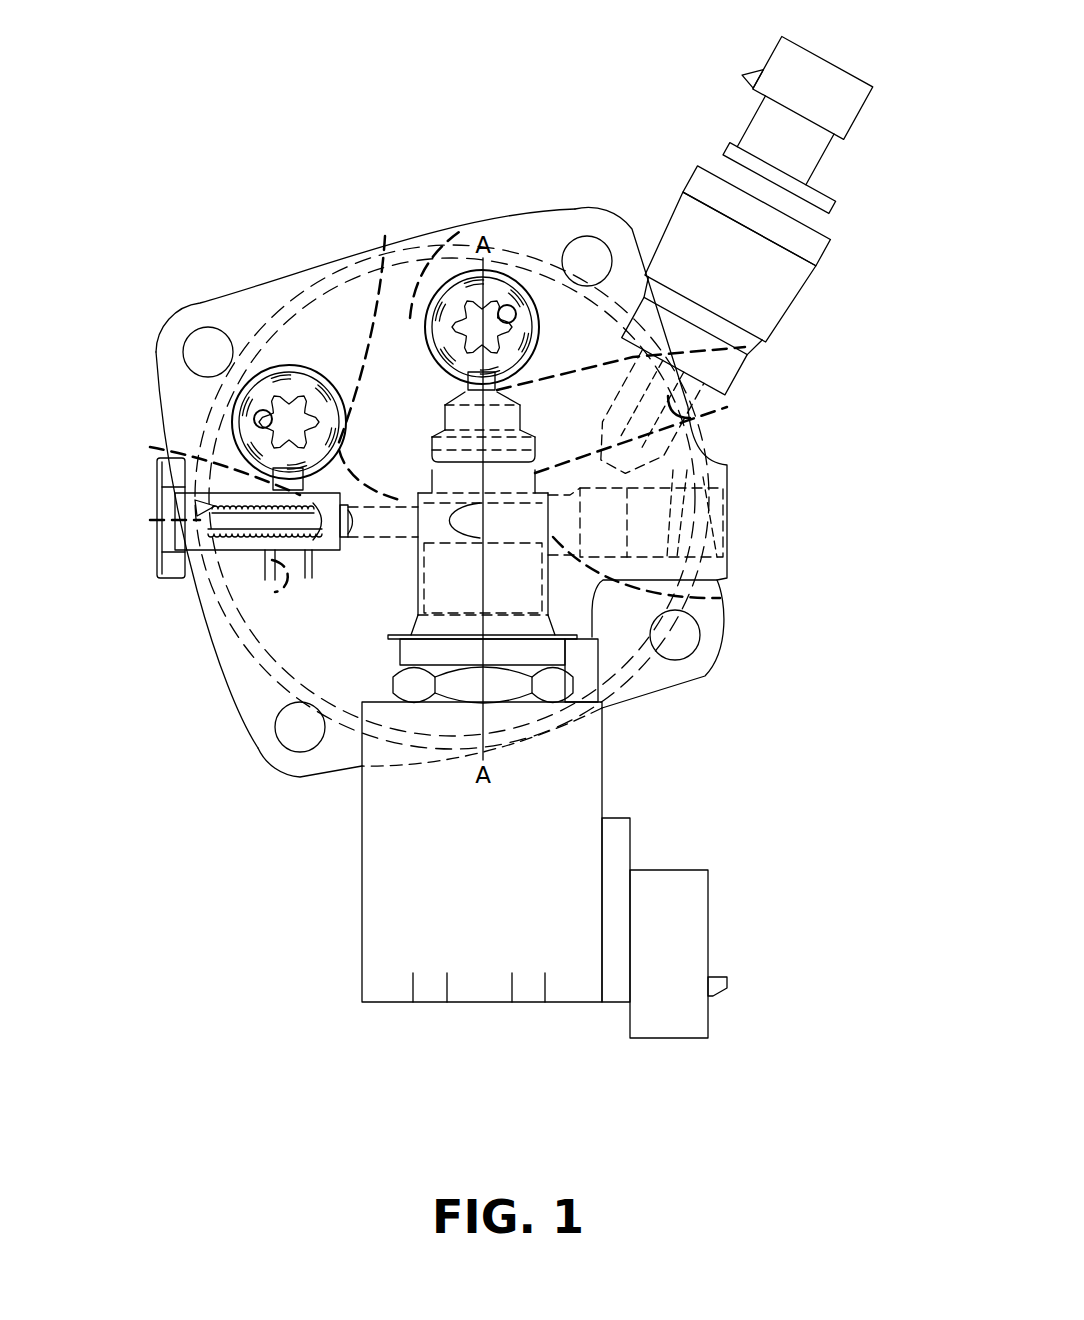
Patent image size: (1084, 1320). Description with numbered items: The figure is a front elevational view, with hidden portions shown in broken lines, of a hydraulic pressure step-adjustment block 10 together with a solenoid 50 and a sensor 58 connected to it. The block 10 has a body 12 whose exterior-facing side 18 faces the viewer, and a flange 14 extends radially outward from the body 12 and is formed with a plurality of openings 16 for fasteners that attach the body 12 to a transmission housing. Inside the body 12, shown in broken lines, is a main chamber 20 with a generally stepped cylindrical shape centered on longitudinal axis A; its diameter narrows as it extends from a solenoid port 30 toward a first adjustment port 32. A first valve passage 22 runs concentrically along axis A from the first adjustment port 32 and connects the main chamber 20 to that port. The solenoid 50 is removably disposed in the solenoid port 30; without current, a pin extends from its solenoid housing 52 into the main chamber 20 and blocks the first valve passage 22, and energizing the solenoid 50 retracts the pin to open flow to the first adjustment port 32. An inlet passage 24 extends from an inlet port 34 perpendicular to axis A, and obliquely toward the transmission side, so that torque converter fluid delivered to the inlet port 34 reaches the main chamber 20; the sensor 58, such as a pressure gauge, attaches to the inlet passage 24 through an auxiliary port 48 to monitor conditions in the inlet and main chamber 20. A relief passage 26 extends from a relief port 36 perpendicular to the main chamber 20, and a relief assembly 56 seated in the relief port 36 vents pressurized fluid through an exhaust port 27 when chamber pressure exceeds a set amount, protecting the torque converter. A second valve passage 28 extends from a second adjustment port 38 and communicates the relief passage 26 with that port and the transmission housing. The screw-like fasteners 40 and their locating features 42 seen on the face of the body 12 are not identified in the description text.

The hydraulic pressure step-adjustment block 10 is at (491, 103).
The body 12 is at (310, 258).
The flange 14 is at (250, 288).
The openings 16 is at (205, 352).
The exterior-facing side 18 is at (253, 697).
The main chamber 20 is at (551, 513).
The first valve passage 22 is at (745, 347).
The inlet passage 24 is at (720, 598).
The relief passage 26 is at (372, 535).
The exhaust port 27 is at (290, 587).
The second valve passage 28 is at (210, 466).
The solenoid port 30 is at (547, 628).
The first adjustment port 32 is at (467, 220).
The inlet port 34 is at (722, 492).
The relief port 36 is at (180, 521).
The second adjustment port 38 is at (369, 354).
The torx fastener 40 is at (293, 368).
The fastener locating tab 42 is at (262, 428).
The auxiliary port 48 is at (727, 398).
The solenoid 50 is at (360, 855).
The solenoid housing 52 is at (603, 798).
The relief assembly 56 is at (262, 546).
The sensor 58 is at (837, 207).